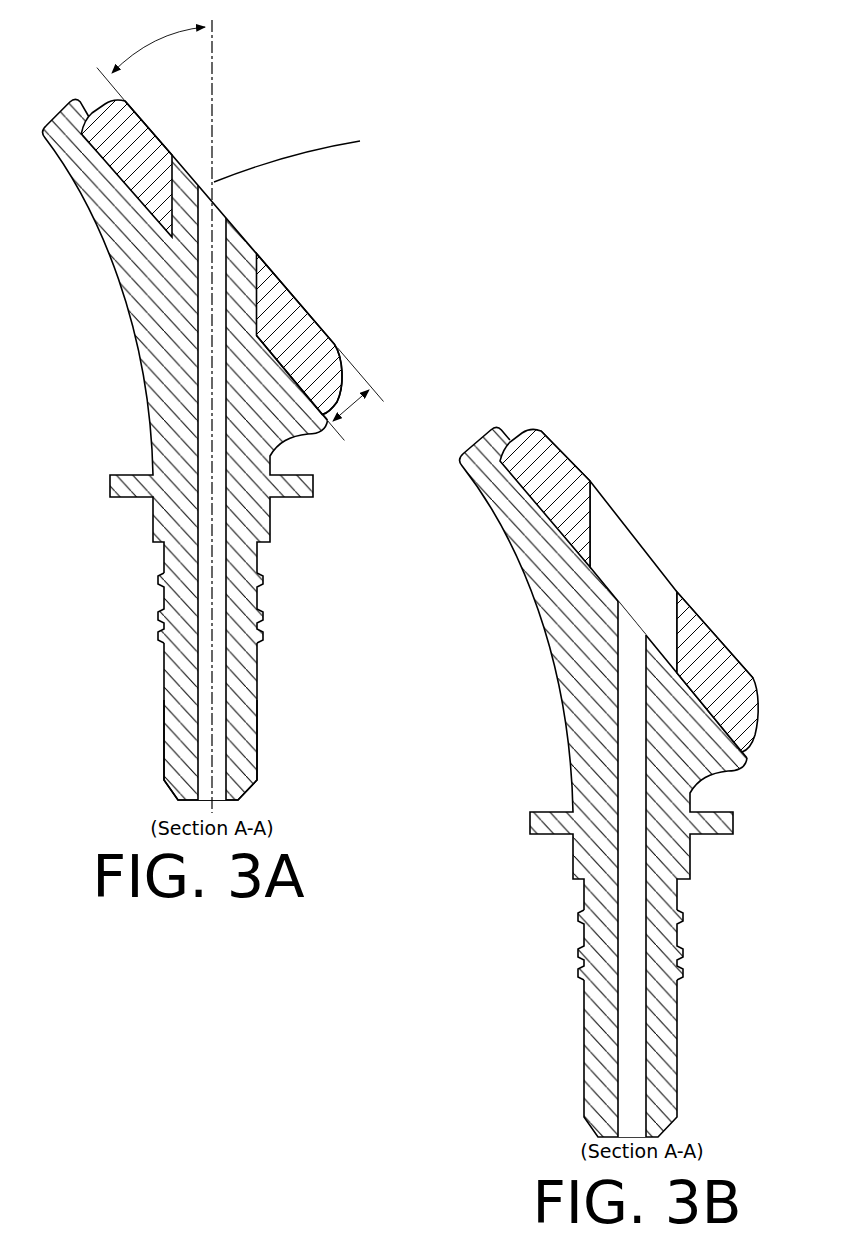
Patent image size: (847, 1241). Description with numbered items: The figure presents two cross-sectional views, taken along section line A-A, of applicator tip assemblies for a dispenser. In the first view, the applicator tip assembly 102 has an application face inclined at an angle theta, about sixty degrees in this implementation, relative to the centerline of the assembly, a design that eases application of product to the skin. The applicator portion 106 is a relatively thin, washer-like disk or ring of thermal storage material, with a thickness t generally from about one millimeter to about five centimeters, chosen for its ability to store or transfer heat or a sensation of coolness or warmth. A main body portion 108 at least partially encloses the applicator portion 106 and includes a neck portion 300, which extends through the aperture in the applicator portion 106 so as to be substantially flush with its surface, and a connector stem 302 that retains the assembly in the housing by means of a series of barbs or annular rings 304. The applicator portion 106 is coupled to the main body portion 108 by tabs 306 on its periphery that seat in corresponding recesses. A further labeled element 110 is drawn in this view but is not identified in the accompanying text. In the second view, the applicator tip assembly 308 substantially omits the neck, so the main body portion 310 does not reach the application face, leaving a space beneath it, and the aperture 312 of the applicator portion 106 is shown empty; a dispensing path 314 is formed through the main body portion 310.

In FIG. 3A, the applicator tip assembly 102 is at (254, 416).
In FIG. 3A, the applicator portion 106 is at (300, 330).
In FIG. 3B, the applicator portion 106 is at (703, 628).
In FIG. 3A, the main body portion 108 is at (157, 338).
In FIG. 3A, the lumen 110 is at (213, 470).
In FIG. 3A, the neck portion 300 is at (237, 253).
In FIG. 3A, the connector stem 302 is at (178, 672).
In FIG. 3A, the barbs or annular rings 304 is at (260, 617).
In FIG. 3A, the tabs 306 is at (320, 381).
In FIG. 3B, the applicator tip assembly 308 is at (630, 755).
In FIG. 3B, the main body portion 310 is at (578, 653).
In FIG. 3B, the aperture 312 is at (628, 531).
In FIG. 3B, the dispensing path 314 is at (628, 850).